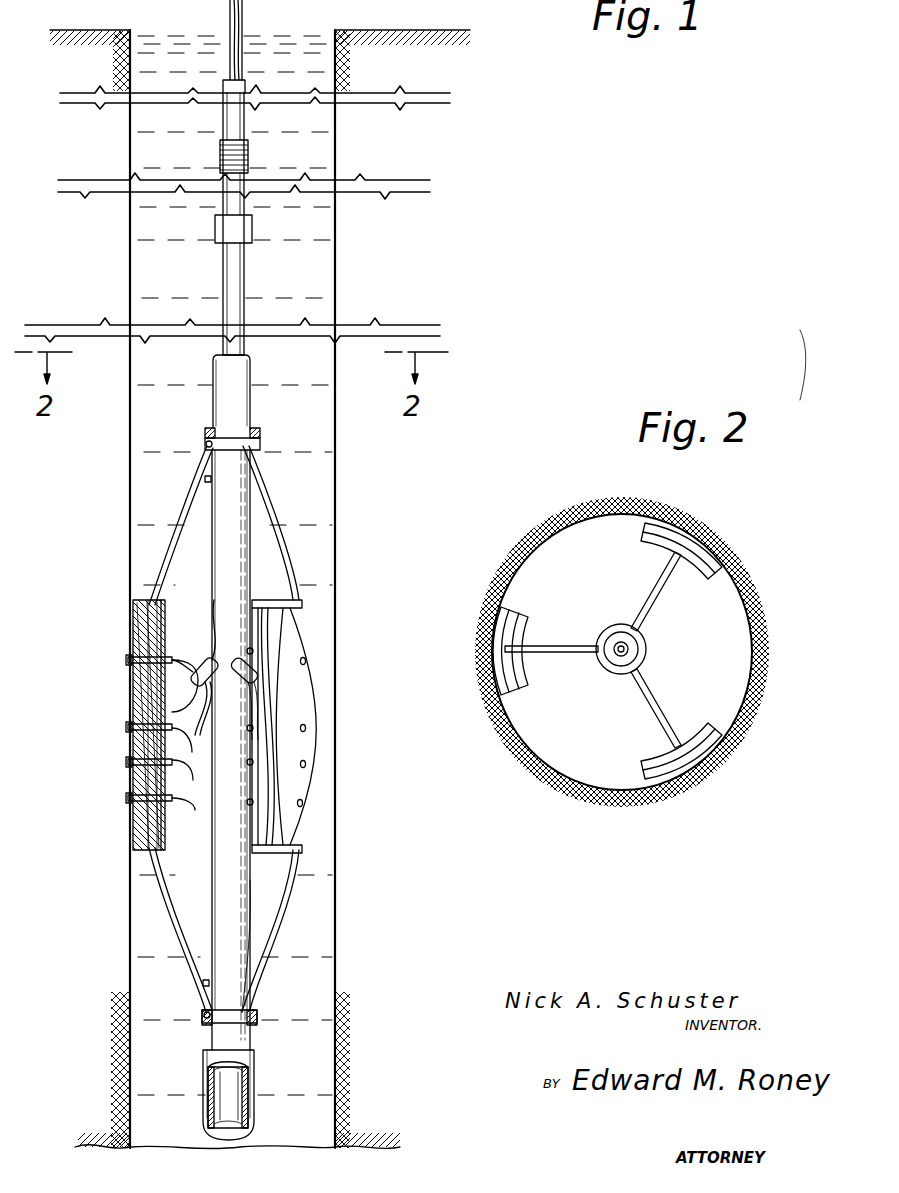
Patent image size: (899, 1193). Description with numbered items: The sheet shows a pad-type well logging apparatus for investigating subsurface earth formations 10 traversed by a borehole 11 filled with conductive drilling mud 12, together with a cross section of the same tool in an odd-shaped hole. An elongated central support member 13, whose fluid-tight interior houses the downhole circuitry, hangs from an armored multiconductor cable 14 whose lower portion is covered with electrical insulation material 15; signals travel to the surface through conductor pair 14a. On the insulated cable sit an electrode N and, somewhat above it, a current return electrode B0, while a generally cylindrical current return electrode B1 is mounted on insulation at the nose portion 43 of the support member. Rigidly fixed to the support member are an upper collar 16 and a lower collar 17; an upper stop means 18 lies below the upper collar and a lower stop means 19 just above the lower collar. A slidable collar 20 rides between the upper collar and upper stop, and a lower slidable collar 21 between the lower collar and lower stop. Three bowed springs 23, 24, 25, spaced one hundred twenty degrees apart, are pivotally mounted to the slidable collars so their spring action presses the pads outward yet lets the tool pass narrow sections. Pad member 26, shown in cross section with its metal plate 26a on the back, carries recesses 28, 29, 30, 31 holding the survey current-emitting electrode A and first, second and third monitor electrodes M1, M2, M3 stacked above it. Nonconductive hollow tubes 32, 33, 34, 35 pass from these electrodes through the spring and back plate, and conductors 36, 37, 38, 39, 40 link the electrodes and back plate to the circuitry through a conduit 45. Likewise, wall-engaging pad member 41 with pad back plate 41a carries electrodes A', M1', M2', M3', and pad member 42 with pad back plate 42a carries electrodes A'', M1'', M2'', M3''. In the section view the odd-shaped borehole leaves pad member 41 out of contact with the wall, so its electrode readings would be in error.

In FIG. 1, the subsurface earth formations 10 is at (362, 555).
In FIG. 1, the borehole 11 is at (325, 222).
In FIG. 2, the borehole 11 is at (728, 586).
In FIG. 1, the drilling mud 12 is at (183, 267).
In FIG. 1, the central support member 13 is at (226, 366).
In FIG. 2, the central support member 13 is at (616, 675).
In FIG. 1, the armored multiconductor cable 14 is at (229, 12).
In FIG. 2, the armored multiconductor cable 14 is at (628, 647).
In FIG. 1, the conductor pair 14a is at (243, 8).
In FIG. 1, the electrical insulation material 15 is at (245, 270).
In FIG. 2, the electrical insulation material 15 is at (631, 650).
In FIG. 1, the upper collar 16 is at (258, 431).
In FIG. 2, the upper collar 16 is at (648, 658).
In FIG. 1, the lower collar 17 is at (260, 1020).
In FIG. 1, the upper stop means 18 is at (208, 483).
In FIG. 1, the lower stop means 19 is at (202, 984).
In FIG. 1, the slidable collar 20 is at (262, 446).
In FIG. 1, the lower slidable collar 21 is at (258, 1012).
In FIG. 1, the bowed spring 23 is at (192, 482).
In FIG. 2, the bowed spring 23 is at (590, 644).
In FIG. 1, the bowed spring 24 is at (272, 508).
In FIG. 2, the bowed spring 24 is at (655, 695).
In FIG. 1, the bowed spring 25 is at (252, 882).
In FIG. 2, the bowed spring 25 is at (655, 602).
In FIG. 1, the pad member 26 is at (130, 684).
In FIG. 2, the pad member 26 is at (500, 660).
In FIG. 1, the metal plate 26a is at (160, 836).
In FIG. 2, the metal plate 26a is at (520, 664).
In FIG. 1, the recess 28 is at (128, 800).
In FIG. 1, the recess 29 is at (128, 762).
In FIG. 1, the recess 30 is at (128, 730).
In FIG. 1, the recess 31 is at (128, 662).
In FIG. 1, the hollow tube 32 is at (168, 816).
In FIG. 1, the hollow tube 33 is at (175, 768).
In FIG. 1, the hollow tube 34 is at (175, 746).
In FIG. 1, the hollow tube 35 is at (130, 640).
In FIG. 1, the conductor 36 is at (175, 798).
In FIG. 1, the conductor 37 is at (192, 745).
In FIG. 1, the conductor 38 is at (178, 708).
In FIG. 1, the conductor 39 is at (196, 657).
In FIG. 1, the conductor 40 is at (130, 720).
In FIG. 1, the wall-engaging pad member 41 is at (305, 682).
In FIG. 2, the wall-engaging pad member 41 is at (678, 770).
In FIG. 2, the pad back plate 41a is at (660, 750).
In FIG. 1, the wall-engaging pad member 42 is at (283, 603).
In FIG. 2, the wall-engaging pad member 42 is at (695, 530).
In FIG. 1, the pad back plate 42a is at (272, 614).
In FIG. 2, the pad back plate 42a is at (656, 545).
In FIG. 1, the nose portion 43 is at (206, 1052).
In FIG. 1, the conduit 45 is at (212, 612).
In FIG. 1, the survey current-emitting electrode A is at (135, 798).
In FIG. 1, the survey current electrode A' is at (352, 791).
In FIG. 1, the survey current electrode A'' is at (236, 789).
In FIG. 1, the first monitor electrode M1 is at (134, 760).
In FIG. 1, the second monitor electrode M2 is at (110, 728).
In FIG. 1, the third monitor electrode M3 is at (110, 651).
In FIG. 1, the first monitor electrode M1' is at (355, 747).
In FIG. 1, the second monitor electrode M2' is at (355, 706).
In FIG. 1, the third monitor electrode M3' is at (355, 640).
In FIG. 1, the first monitor electrode M1'' is at (237, 747).
In FIG. 1, the second monitor electrode M2'' is at (237, 715).
In FIG. 1, the third monitor electrode M3'' is at (237, 637).
In FIG. 1, the current return electrode B0 is at (249, 150).
In FIG. 1, the current return electrode B1 is at (250, 1098).
In FIG. 1, the electrode N is at (233, 229).